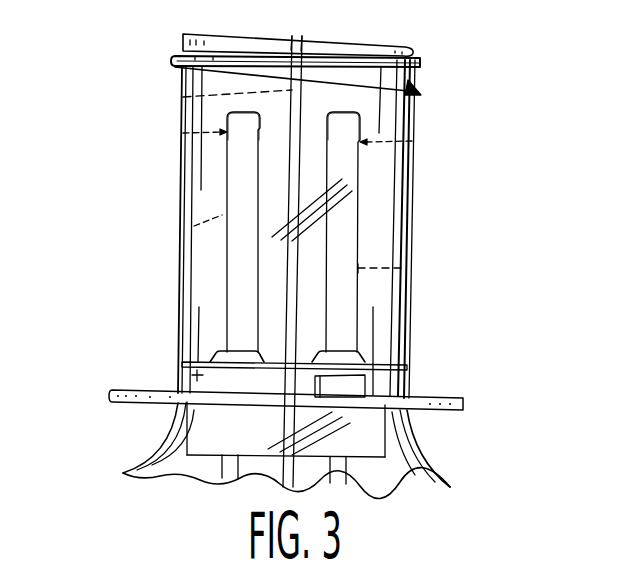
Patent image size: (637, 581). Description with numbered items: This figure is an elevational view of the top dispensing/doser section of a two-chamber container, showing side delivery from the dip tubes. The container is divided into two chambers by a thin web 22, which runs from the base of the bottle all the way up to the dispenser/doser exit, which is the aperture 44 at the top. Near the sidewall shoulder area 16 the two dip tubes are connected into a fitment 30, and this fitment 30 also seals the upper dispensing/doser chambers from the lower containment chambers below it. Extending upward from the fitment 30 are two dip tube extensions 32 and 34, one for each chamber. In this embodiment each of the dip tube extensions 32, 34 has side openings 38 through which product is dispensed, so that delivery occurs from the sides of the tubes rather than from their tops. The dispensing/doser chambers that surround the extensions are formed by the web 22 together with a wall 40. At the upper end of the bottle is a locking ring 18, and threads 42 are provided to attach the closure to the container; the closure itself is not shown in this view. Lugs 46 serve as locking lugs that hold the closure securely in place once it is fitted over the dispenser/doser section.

The sidewall shoulder area 16 is at (410, 428).
The locking ring 18 is at (110, 396).
The web 22 is at (183, 96).
The fitment 30 is at (173, 375).
The dip tube extension 32 is at (190, 228).
The dip tube extension 34 is at (408, 270).
The side openings 38 is at (183, 133).
The wall 40 is at (410, 207).
The threads 42 is at (421, 55).
The aperture 44 is at (378, 42).
The lugs 46 is at (385, 386).